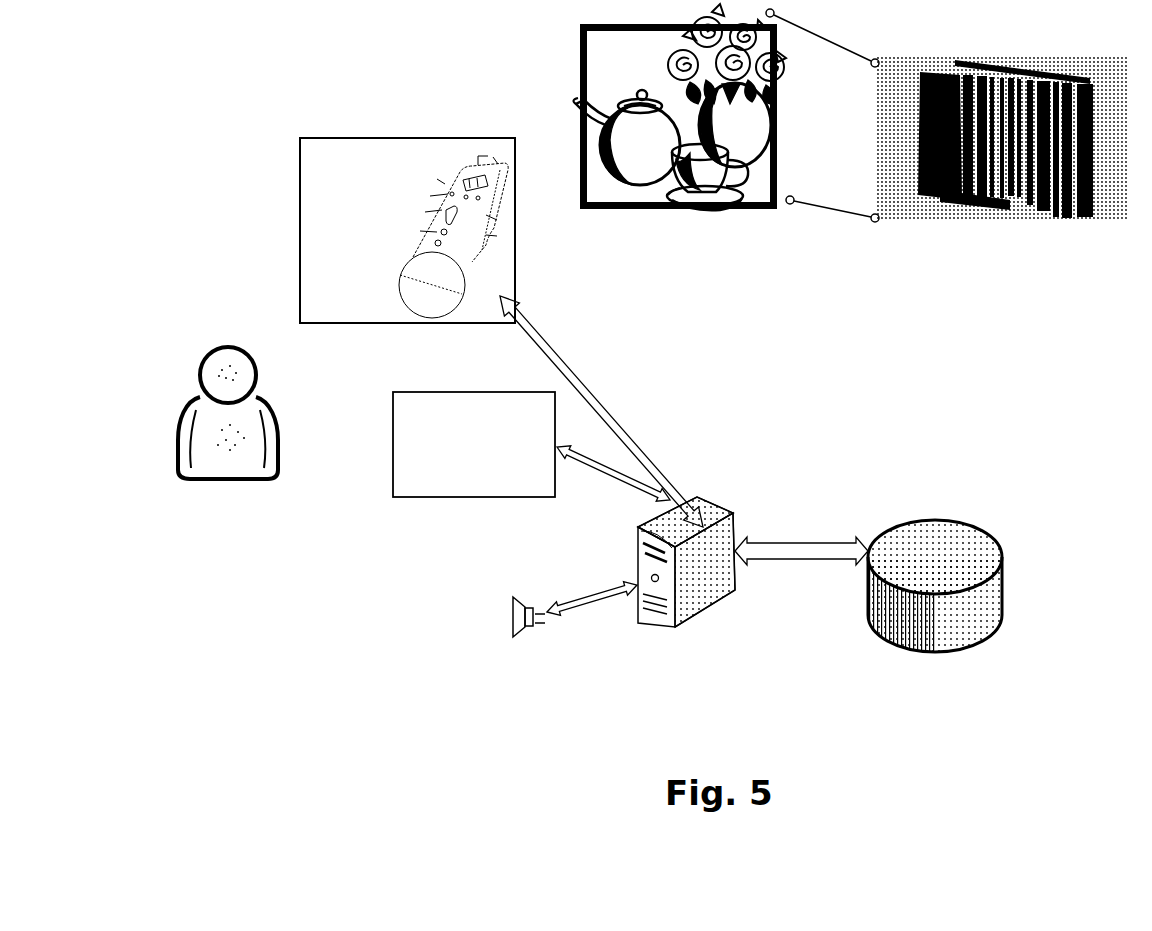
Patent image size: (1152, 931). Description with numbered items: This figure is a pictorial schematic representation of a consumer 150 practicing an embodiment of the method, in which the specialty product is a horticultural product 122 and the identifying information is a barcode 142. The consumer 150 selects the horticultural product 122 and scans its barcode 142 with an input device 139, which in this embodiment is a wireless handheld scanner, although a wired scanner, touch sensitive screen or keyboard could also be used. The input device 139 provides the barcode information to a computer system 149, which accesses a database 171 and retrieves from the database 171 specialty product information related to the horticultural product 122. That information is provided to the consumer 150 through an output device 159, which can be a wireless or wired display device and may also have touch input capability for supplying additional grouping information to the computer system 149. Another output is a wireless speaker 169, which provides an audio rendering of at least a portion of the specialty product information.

The input device 139 is at (326, 113).
The horticultural product 122 is at (705, 222).
The barcode 142 is at (1083, 245).
The consumer 150 is at (222, 510).
The output device 159 is at (474, 444).
The computer system 149 is at (707, 642).
The wireless speaker 169 is at (492, 643).
The database 171 is at (1005, 665).